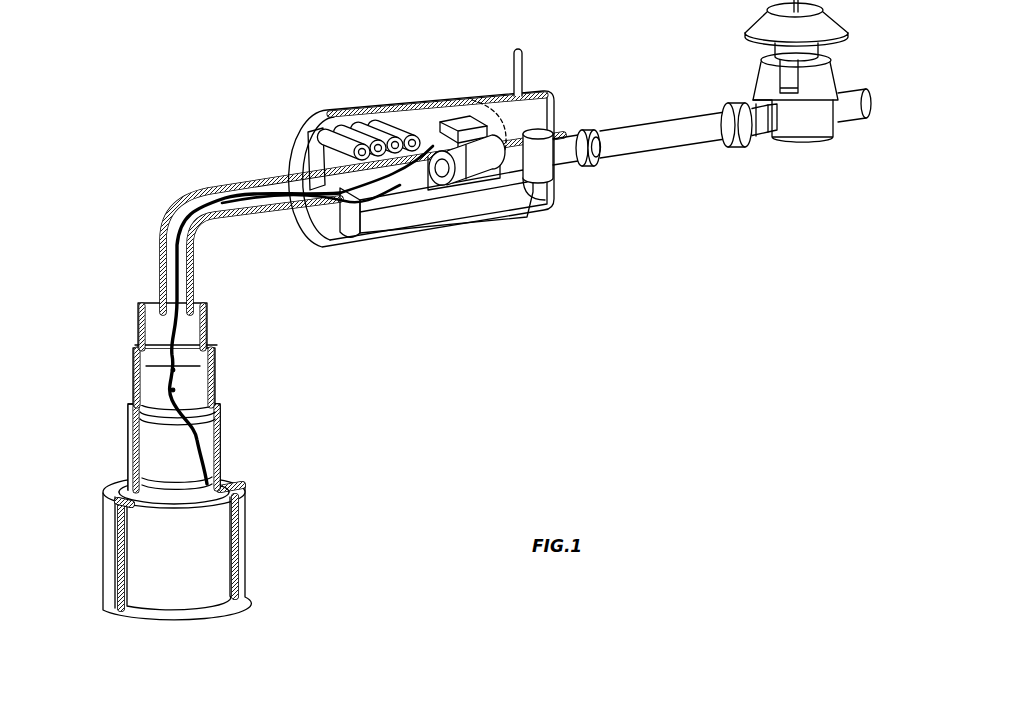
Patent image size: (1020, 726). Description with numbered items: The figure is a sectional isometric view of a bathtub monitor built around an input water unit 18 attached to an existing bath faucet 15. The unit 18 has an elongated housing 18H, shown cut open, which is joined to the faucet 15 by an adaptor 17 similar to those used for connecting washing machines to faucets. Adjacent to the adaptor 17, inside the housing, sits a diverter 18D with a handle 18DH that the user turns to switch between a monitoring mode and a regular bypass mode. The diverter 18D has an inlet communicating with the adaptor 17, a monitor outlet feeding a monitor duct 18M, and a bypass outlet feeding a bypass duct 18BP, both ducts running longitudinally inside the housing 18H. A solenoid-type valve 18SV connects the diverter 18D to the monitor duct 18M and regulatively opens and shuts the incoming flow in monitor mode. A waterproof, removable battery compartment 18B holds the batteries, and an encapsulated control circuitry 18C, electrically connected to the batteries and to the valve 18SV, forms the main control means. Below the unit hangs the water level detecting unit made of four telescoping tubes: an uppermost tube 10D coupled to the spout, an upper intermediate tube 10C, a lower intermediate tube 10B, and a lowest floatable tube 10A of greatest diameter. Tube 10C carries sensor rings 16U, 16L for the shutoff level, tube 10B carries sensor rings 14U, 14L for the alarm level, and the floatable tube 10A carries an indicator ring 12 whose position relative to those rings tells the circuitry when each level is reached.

The lowest floatable tube 10A is at (101, 546).
The lower intermediate tube 10B is at (128, 446).
The upper intermediate tube 10C is at (133, 385).
The uppermost tube 10D is at (138, 326).
The indicator ring 12 is at (115, 517).
The upper ring 14U is at (222, 482).
The lower ring 14L is at (228, 495).
The upper ring 16U is at (221, 408).
The lower ring 16L is at (216, 420).
The bath faucet 15 is at (829, 158).
The adaptor 17 is at (602, 153).
The input water unit 18 is at (408, 150).
The battery compartment 18B is at (330, 122).
The bypass duct 18BP is at (455, 238).
The control circuitry 18C is at (447, 126).
The diverter 18D is at (560, 172).
The handle 18DH is at (525, 50).
The housing 18H is at (556, 110).
The monitor duct 18M is at (385, 186).
The valve 18SV is at (470, 176).